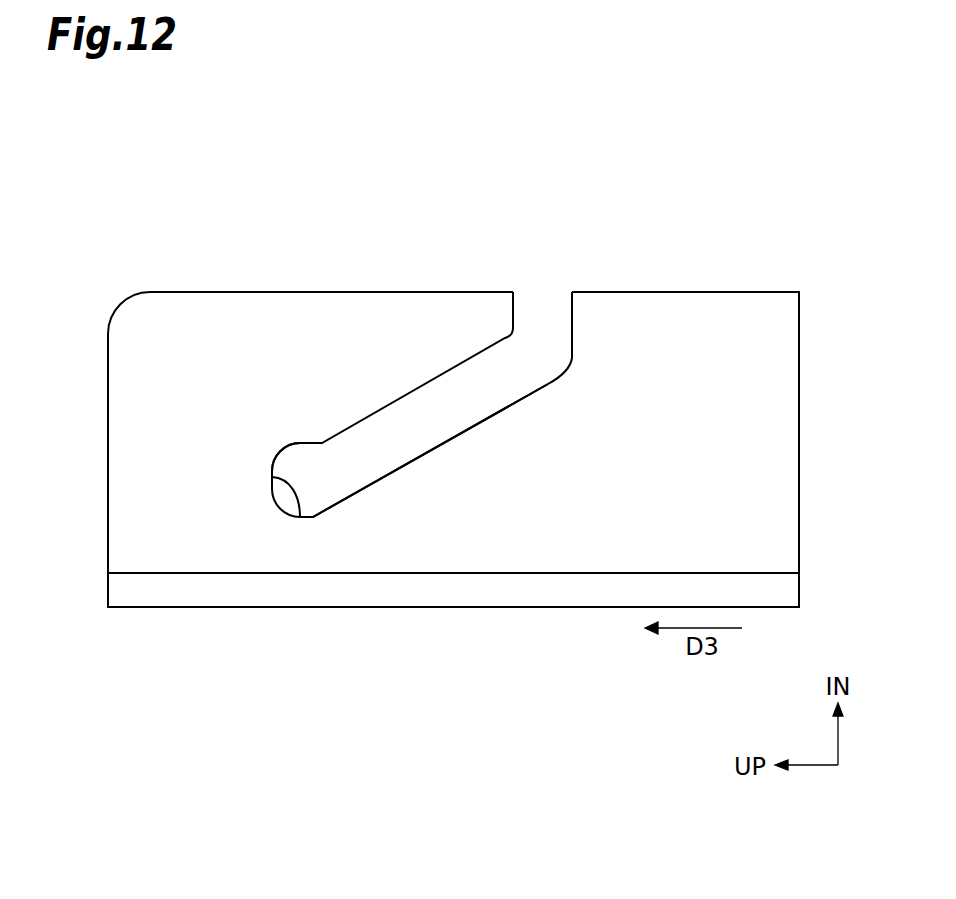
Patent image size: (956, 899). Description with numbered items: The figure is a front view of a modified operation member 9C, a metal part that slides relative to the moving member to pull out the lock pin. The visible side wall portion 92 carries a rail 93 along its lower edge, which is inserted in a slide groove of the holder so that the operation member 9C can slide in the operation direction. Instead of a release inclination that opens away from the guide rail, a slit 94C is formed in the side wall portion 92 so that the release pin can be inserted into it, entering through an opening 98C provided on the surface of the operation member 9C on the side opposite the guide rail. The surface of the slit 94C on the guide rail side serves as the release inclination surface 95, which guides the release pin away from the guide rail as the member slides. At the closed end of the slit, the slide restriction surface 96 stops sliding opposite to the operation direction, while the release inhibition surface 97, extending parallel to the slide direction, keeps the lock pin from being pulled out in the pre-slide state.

The operation member 9C is at (642, 292).
The side wall portion 92 is at (582, 497).
The rail 93 is at (462, 590).
The slit 94C is at (506, 373).
The release inclination surface 95 is at (458, 433).
The slide restriction surface 96 is at (300, 517).
The release inhibition surface 97 is at (308, 443).
The opening 98C is at (573, 316).